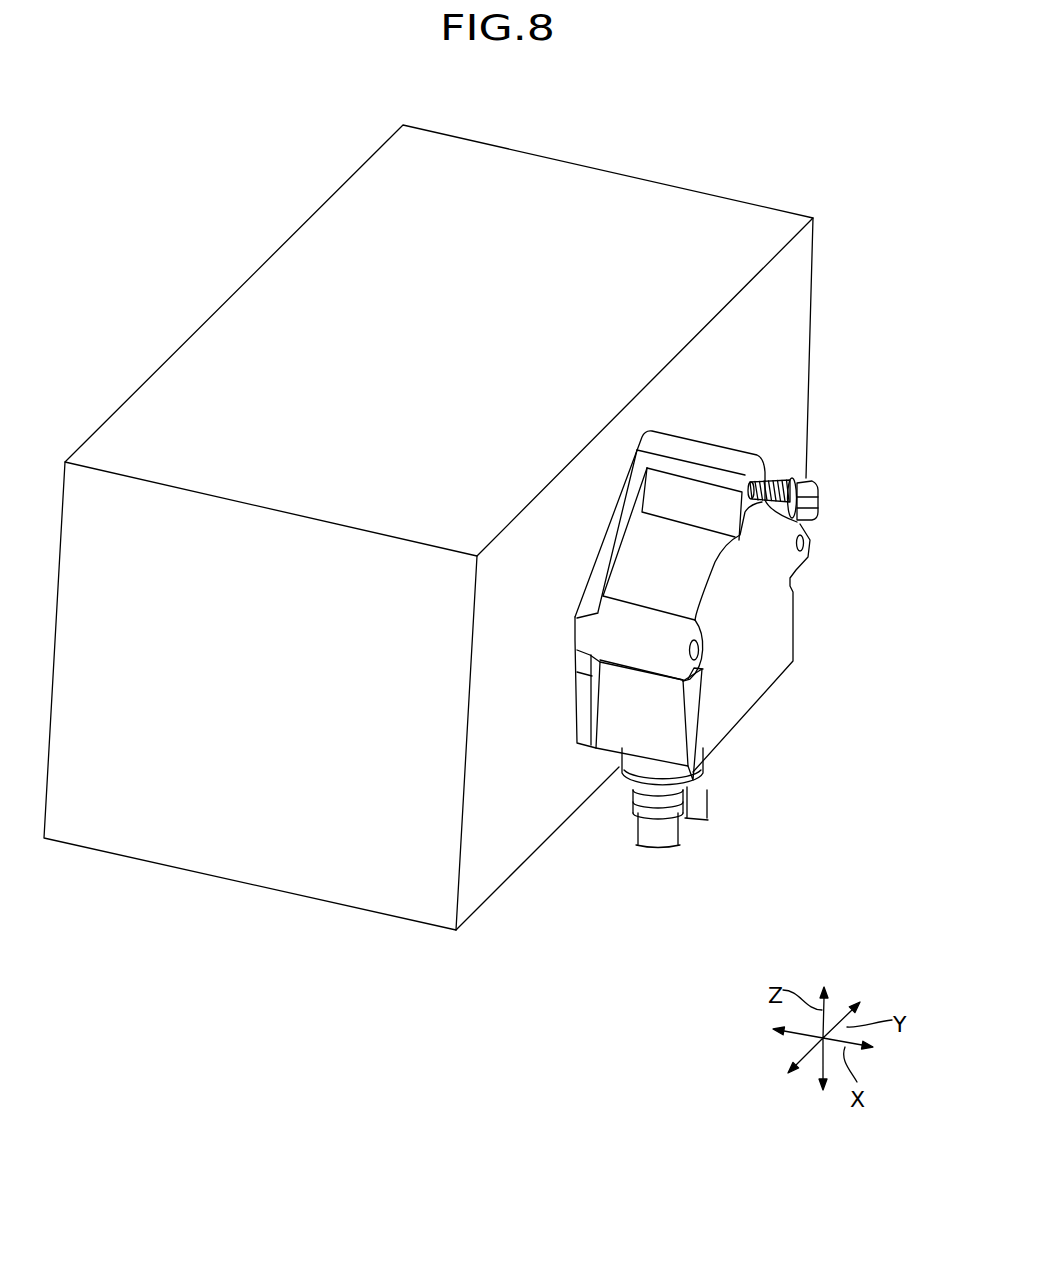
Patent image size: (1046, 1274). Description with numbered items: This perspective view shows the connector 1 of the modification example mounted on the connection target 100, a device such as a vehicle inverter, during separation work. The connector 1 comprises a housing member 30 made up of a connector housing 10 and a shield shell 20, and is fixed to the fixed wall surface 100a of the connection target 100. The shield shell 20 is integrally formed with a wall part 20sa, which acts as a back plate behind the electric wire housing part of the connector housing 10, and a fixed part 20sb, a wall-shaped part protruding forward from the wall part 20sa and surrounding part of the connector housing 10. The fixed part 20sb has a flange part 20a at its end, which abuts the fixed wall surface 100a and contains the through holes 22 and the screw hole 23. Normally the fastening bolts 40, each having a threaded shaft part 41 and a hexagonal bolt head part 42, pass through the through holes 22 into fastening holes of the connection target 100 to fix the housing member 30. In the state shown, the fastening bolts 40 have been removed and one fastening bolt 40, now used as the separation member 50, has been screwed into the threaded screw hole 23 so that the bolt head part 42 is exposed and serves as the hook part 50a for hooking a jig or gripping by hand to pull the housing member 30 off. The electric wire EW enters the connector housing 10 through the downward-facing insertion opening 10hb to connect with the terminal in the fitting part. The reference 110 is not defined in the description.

The connector 1 is at (724, 630).
The connector housing 10 is at (722, 781).
The insertion opening 10hb is at (703, 797).
The shield shell 20 is at (691, 628).
The flange part 20a is at (618, 499).
The wall part 20sa is at (780, 612).
The fixed part 20sb is at (633, 725).
The through hole 22 is at (805, 543).
The screw hole 23 is at (770, 470).
The housing member 30 is at (691, 628).
The fastening bolt 40 is at (853, 454).
The shaft part 41 is at (805, 470).
The bolt head part 42 is at (878, 468).
The separation member 50 is at (878, 474).
The hook part 50a is at (817, 478).
The connection target 100 is at (480, 515).
The fixed wall surface 100a is at (775, 322).
The top surface of structure 110 is at (520, 172).
The electric wire EW is at (705, 817).